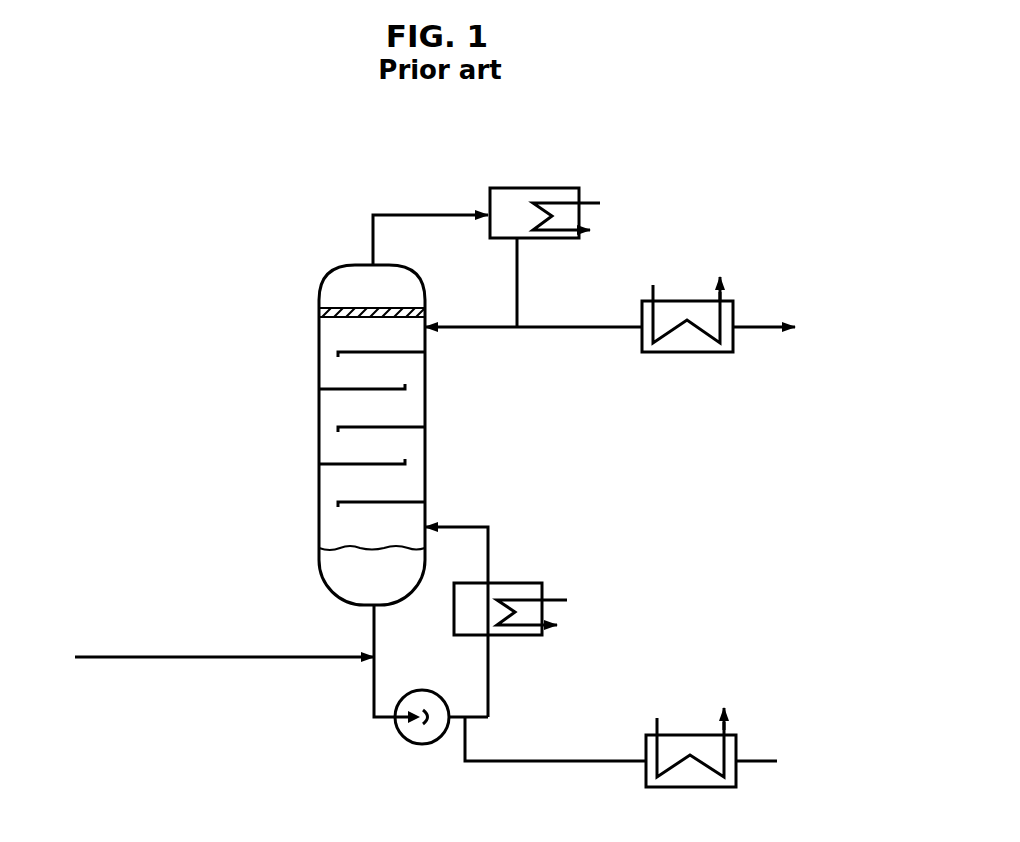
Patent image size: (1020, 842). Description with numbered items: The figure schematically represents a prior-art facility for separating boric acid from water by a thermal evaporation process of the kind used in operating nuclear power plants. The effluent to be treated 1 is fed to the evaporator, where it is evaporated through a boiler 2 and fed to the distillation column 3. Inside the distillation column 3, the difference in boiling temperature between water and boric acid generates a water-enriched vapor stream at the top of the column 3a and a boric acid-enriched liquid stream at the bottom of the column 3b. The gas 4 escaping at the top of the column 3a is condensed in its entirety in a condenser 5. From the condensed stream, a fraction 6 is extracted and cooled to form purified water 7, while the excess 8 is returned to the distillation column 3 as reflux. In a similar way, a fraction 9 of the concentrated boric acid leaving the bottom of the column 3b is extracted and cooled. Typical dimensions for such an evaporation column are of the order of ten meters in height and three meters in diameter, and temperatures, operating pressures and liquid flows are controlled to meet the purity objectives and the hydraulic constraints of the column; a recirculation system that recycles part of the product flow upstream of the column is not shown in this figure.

The effluent to be treated 1 is at (210, 656).
The boiler 2 is at (510, 582).
The distillation column 3 is at (308, 422).
The top of the column 3a is at (372, 287).
The bottom of the column 3b is at (372, 580).
The gas 4 is at (430, 213).
The condenser 5 is at (536, 187).
The fraction 6 is at (575, 330).
The purified water 7 is at (757, 325).
The excess 8 is at (470, 330).
The fraction of the concentrated boric acid 9 is at (565, 760).